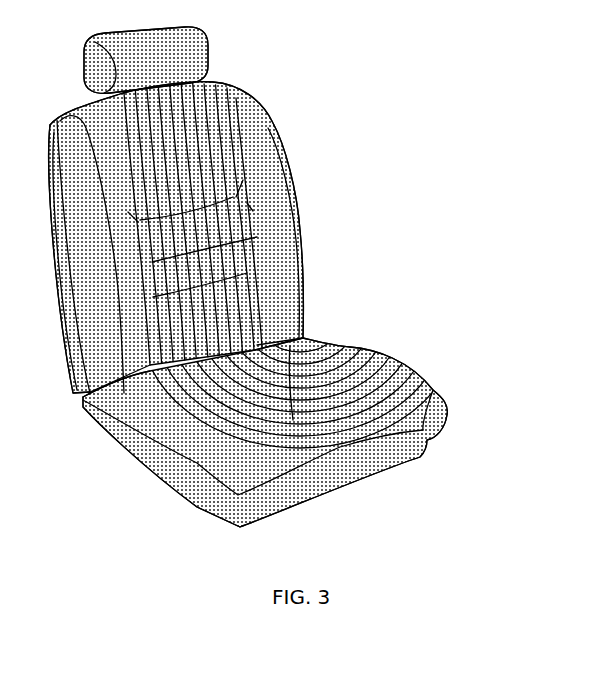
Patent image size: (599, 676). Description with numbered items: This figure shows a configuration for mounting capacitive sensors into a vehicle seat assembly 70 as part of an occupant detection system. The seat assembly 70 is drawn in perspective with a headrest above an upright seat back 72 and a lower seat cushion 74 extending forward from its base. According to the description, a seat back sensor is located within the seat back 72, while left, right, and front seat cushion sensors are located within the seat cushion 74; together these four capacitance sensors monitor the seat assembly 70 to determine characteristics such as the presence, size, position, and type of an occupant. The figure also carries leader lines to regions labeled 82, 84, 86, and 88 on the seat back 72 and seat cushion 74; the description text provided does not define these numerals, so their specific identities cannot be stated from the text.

The seat assembly 70 is at (274, 277).
The seat back 72 is at (278, 148).
The seat cushion 74 is at (291, 361).
The seat back central trim panel 82 is at (253, 267).
The seat back bolster trim panel 84 is at (295, 335).
The seat back seam 86 is at (255, 322).
The seat cushion trim panel 88 is at (340, 405).